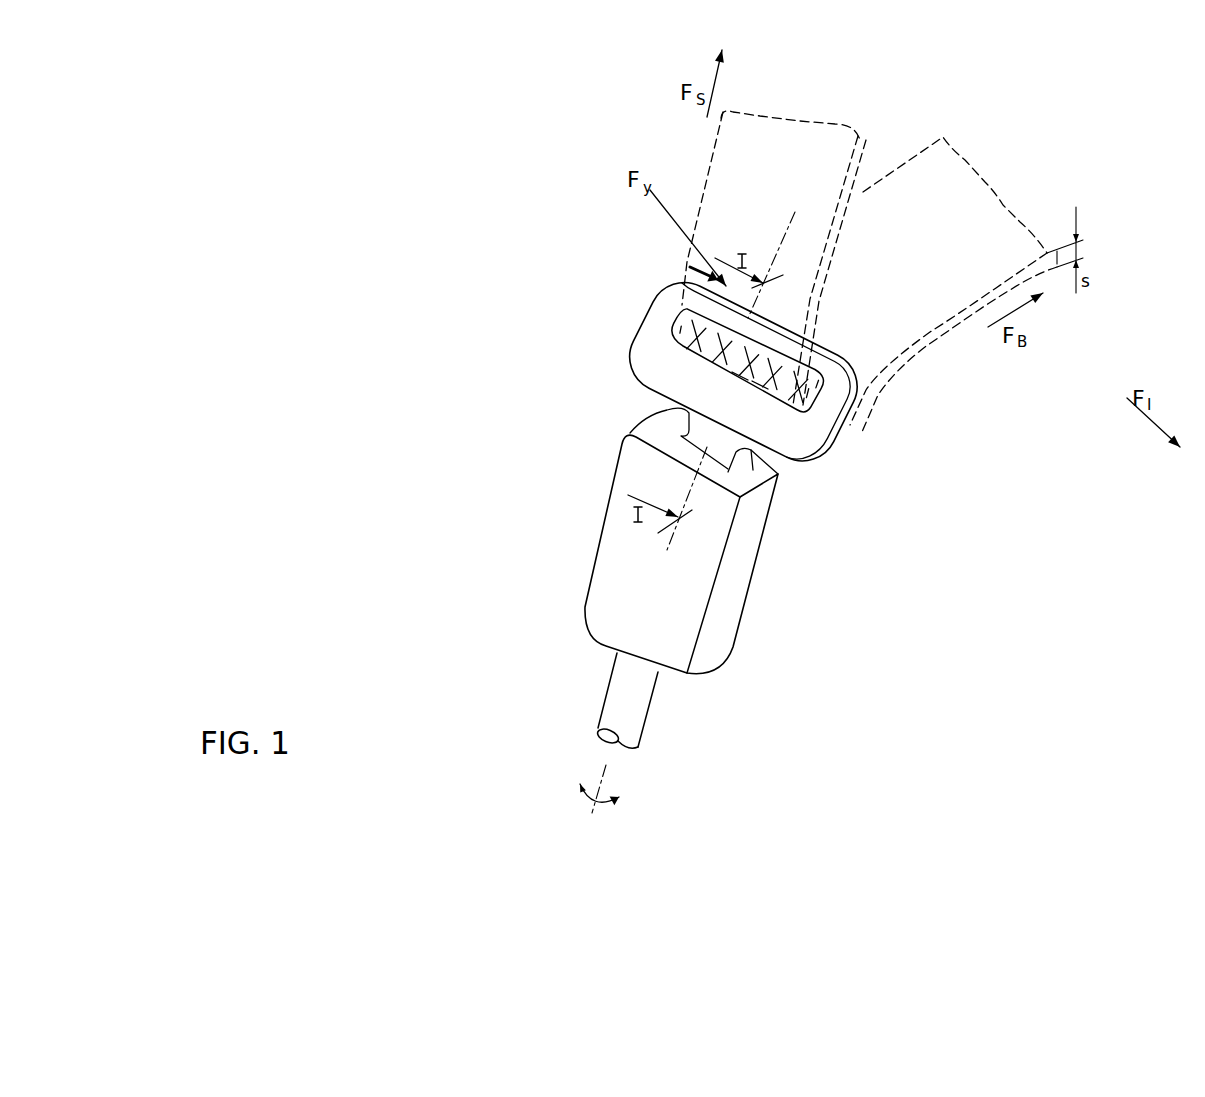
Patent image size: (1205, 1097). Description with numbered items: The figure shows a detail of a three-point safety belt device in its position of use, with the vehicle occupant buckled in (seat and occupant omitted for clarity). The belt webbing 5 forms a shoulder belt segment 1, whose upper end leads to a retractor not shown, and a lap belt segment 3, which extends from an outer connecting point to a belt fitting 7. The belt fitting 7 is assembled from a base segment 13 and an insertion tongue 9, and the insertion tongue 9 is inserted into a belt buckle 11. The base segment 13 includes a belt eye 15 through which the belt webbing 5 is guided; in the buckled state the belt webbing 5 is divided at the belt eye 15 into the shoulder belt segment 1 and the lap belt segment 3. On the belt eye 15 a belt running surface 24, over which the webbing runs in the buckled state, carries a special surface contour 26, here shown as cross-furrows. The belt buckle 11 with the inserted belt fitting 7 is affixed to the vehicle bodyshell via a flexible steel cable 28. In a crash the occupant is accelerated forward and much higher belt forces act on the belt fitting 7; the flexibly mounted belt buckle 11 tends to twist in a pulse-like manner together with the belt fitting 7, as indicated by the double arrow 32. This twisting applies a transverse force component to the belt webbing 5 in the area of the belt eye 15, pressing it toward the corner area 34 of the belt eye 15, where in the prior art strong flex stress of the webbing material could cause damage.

The shoulder belt segment 1 is at (820, 272).
The lap belt segment 3 is at (940, 333).
The belt webbing 5 is at (1002, 410).
The belt fitting 7 is at (542, 318).
The insertion tongue 9 is at (693, 433).
The belt buckle 11 is at (617, 550).
The base segment 13 is at (643, 357).
The belt eye 15 is at (676, 328).
The belt running surface 24 is at (760, 370).
The surface contour 26 is at (740, 367).
The flexible steel cable 28 is at (606, 712).
The double arrow 32 is at (608, 803).
The corner area 34 is at (675, 315).